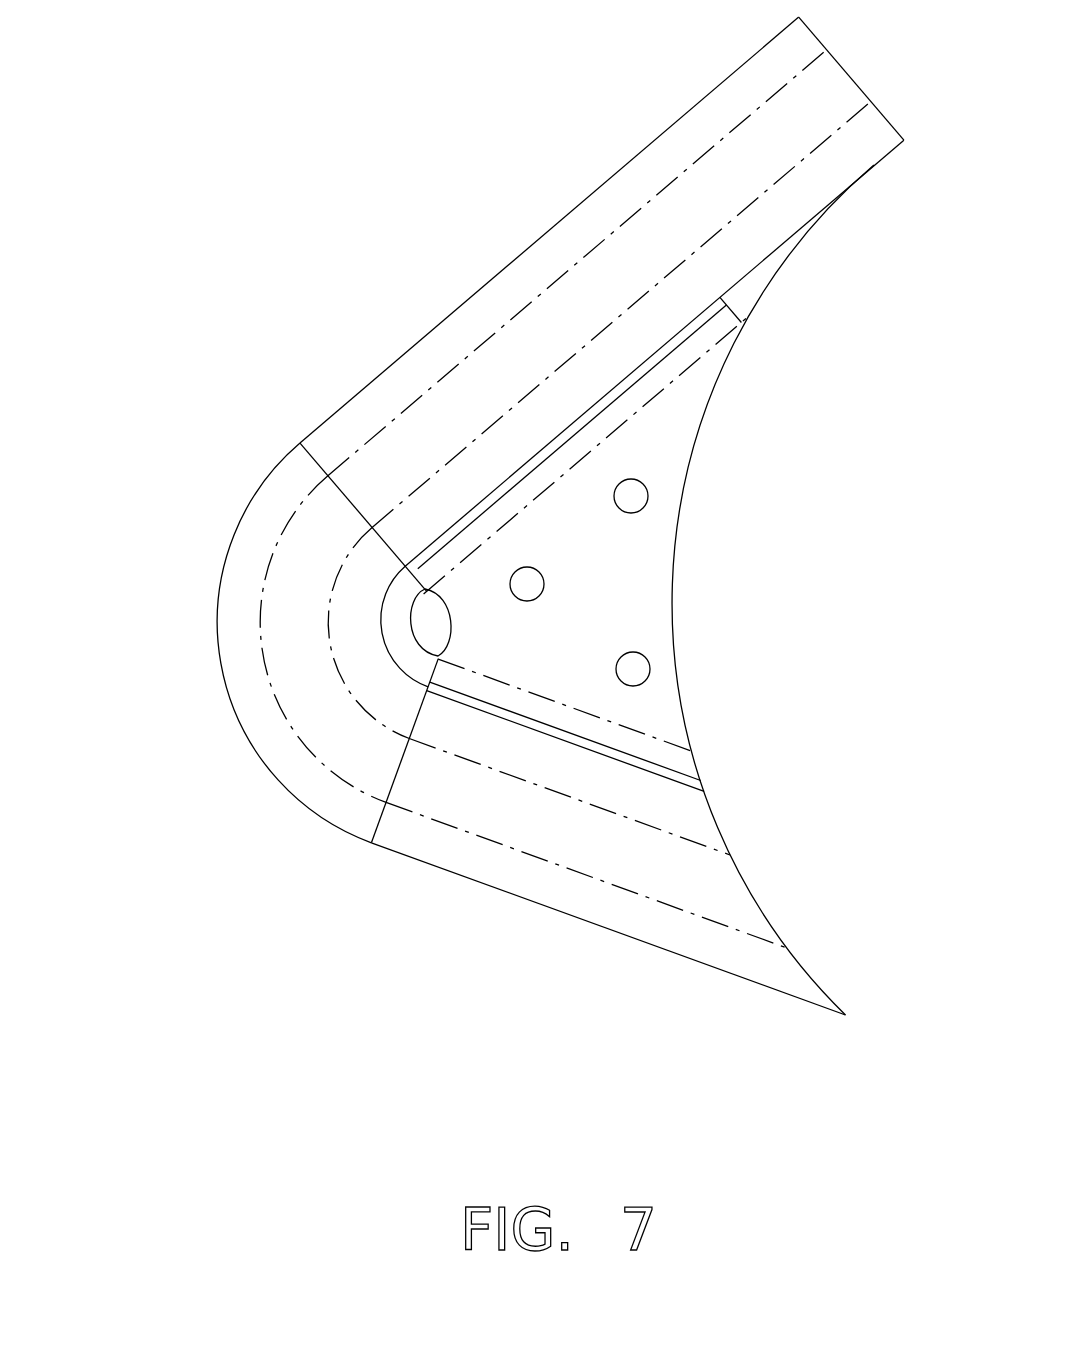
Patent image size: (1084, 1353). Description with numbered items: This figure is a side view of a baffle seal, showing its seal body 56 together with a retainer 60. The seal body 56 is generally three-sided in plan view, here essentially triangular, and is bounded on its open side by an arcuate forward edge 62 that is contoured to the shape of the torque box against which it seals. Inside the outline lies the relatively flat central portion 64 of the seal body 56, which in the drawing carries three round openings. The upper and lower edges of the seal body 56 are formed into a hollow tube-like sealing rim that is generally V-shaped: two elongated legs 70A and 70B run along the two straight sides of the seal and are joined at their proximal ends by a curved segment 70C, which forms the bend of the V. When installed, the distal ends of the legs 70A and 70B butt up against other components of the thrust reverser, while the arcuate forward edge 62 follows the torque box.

The seal body 56 is at (489, 521).
The retainer 60 is at (655, 446).
The arcuate forward edge 62 is at (677, 599).
The central portion 64 is at (745, 296).
The leg 70A is at (588, 287).
The leg 70B is at (665, 925).
The curved segment 70C is at (245, 665).